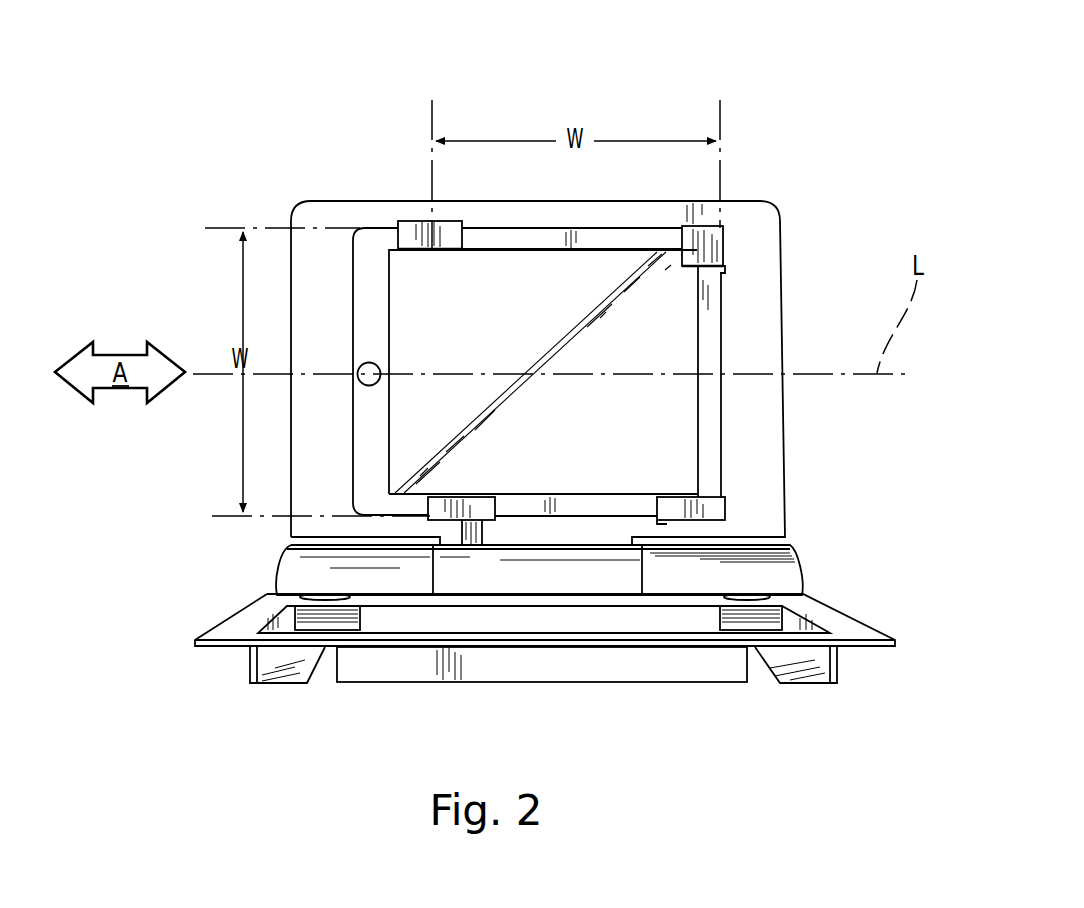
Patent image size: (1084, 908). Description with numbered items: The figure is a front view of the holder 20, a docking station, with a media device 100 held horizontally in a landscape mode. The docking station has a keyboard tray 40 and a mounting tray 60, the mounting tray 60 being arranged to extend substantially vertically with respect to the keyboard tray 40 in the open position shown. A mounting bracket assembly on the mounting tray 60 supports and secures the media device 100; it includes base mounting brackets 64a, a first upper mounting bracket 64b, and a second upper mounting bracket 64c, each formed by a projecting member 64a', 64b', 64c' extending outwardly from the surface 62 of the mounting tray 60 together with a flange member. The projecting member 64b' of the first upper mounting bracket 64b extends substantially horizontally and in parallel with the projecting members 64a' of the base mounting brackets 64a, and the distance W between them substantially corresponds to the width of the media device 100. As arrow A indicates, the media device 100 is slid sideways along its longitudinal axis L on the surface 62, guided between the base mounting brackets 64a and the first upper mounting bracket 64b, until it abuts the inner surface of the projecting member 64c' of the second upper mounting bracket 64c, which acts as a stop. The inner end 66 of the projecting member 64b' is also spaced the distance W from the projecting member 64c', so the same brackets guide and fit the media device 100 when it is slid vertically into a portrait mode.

The holder 20 is at (194, 76).
The keyboard tray 40 is at (842, 623).
The mounting tray 60 is at (330, 218).
The surface of the mounting tray 62 is at (338, 328).
The base mounting brackets 64a is at (522, 519).
The projecting member of base mounting bracket 64a' is at (564, 625).
The first upper mounting bracket 64b is at (371, 193).
The projecting member of first upper mounting bracket 64b' is at (404, 183).
The second upper mounting bracket 64c is at (768, 277).
The projecting member of second upper mounting bracket 64c' is at (768, 238).
The inner end of the projecting member 66 is at (436, 224).
The media device 100 is at (513, 328).